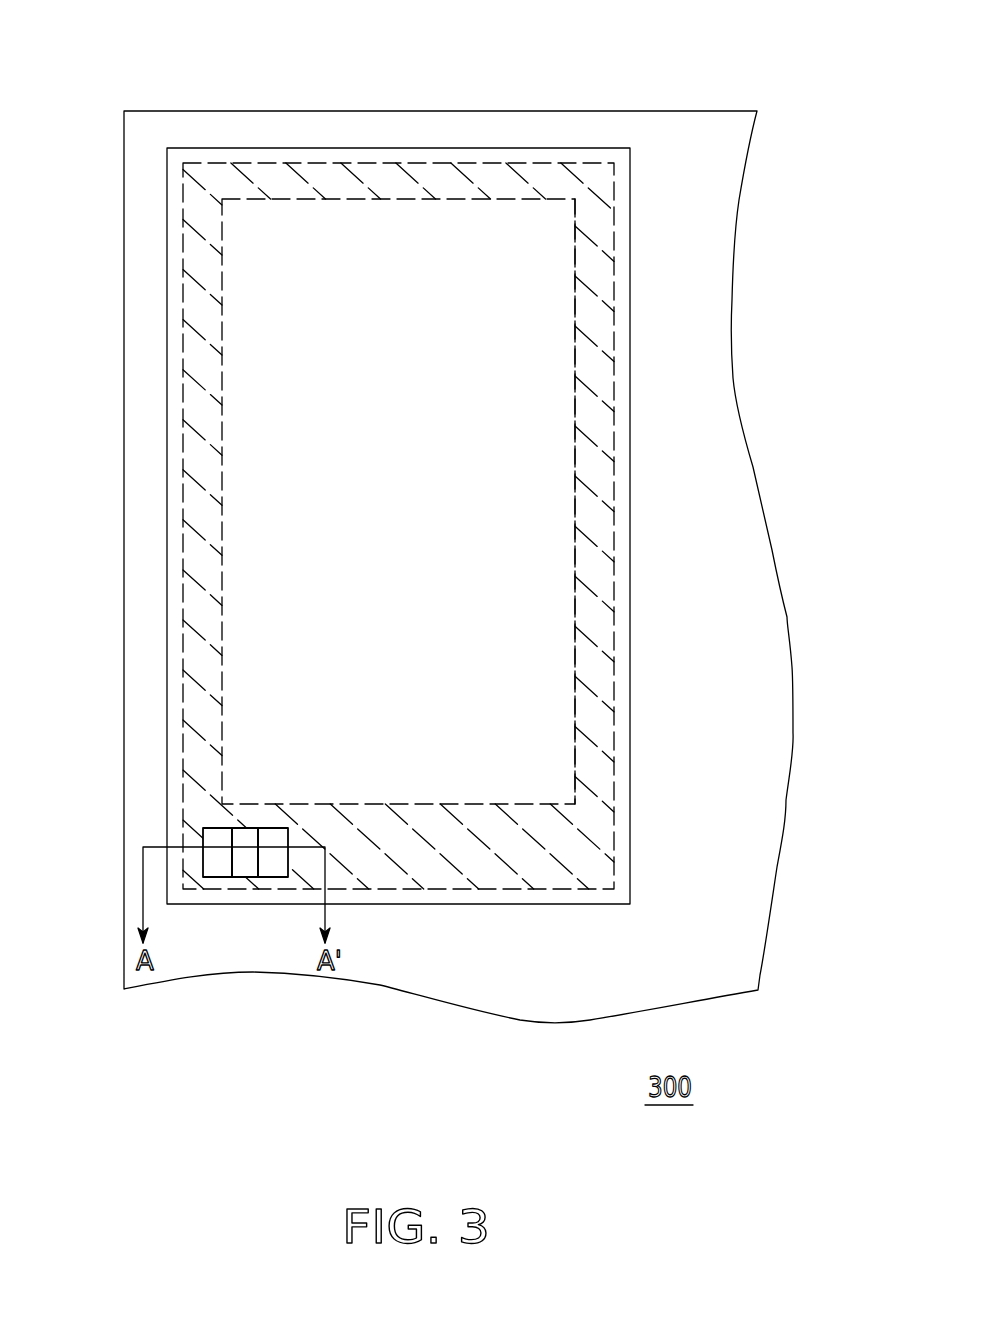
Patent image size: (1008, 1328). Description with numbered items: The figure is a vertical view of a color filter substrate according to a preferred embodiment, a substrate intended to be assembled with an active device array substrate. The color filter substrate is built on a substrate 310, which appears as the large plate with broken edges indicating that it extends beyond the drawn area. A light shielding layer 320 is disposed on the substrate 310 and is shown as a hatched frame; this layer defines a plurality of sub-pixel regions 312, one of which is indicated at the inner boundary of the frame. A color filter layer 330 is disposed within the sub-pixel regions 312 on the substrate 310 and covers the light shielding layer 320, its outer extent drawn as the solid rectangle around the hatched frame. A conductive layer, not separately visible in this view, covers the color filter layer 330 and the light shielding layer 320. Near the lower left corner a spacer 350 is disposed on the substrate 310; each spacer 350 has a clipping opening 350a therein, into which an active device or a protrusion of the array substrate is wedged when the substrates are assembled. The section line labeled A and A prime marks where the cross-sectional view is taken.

The substrate 310 is at (748, 687).
The sub-pixel region 312 is at (575, 523).
The light shielding layer 320 is at (383, 178).
The color filter layer 330 is at (573, 155).
The spacer 350 is at (213, 838).
The clipping opening 350a is at (233, 860).